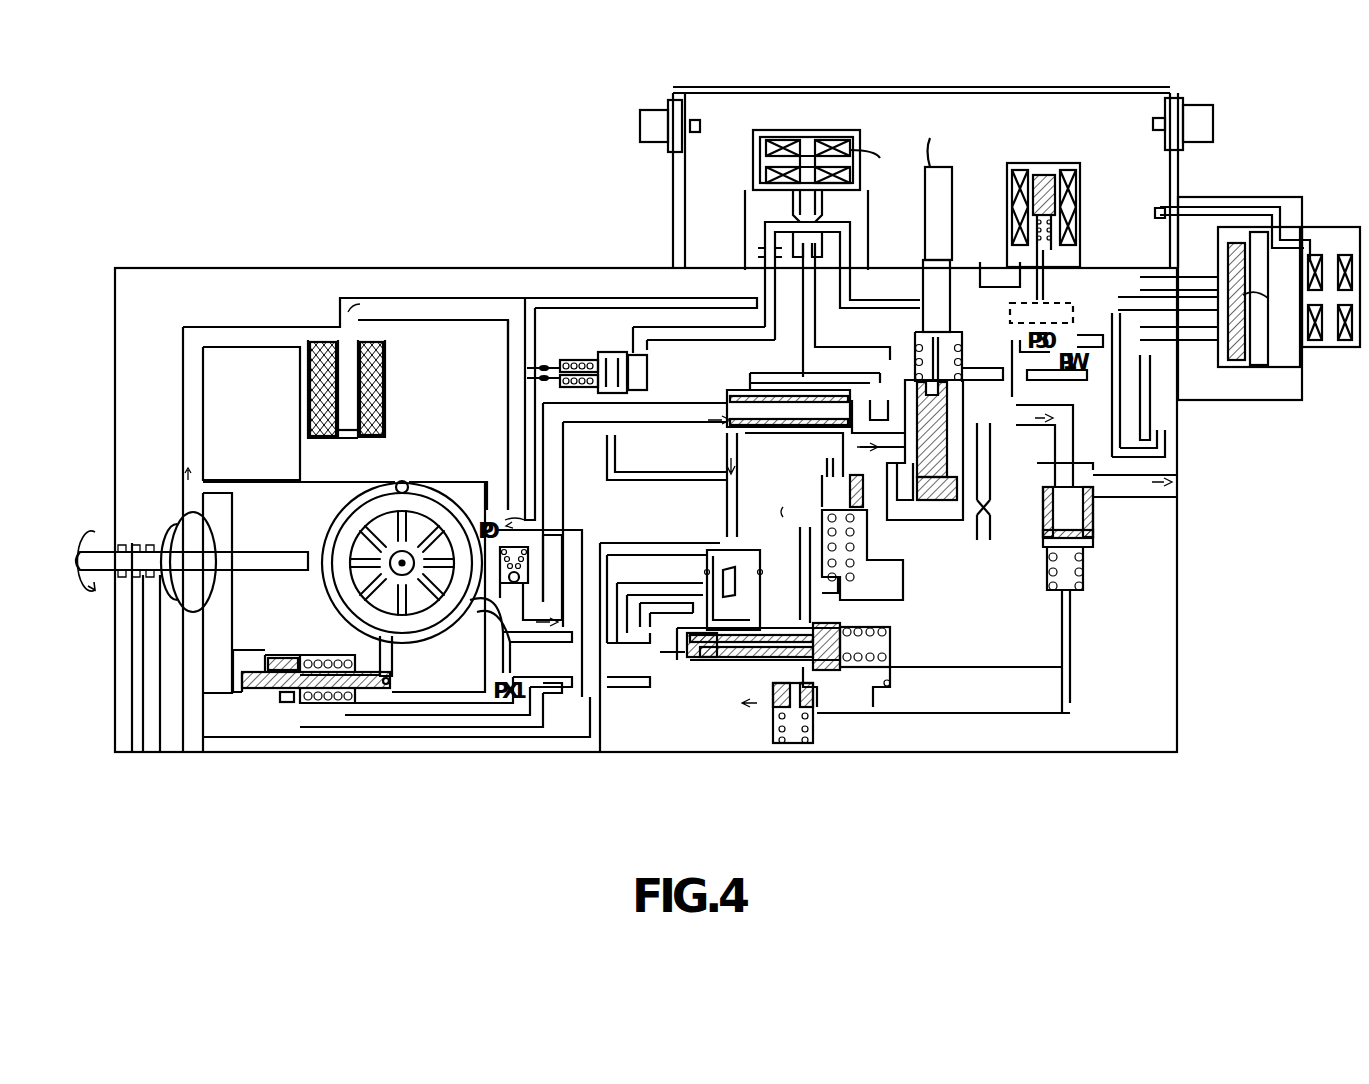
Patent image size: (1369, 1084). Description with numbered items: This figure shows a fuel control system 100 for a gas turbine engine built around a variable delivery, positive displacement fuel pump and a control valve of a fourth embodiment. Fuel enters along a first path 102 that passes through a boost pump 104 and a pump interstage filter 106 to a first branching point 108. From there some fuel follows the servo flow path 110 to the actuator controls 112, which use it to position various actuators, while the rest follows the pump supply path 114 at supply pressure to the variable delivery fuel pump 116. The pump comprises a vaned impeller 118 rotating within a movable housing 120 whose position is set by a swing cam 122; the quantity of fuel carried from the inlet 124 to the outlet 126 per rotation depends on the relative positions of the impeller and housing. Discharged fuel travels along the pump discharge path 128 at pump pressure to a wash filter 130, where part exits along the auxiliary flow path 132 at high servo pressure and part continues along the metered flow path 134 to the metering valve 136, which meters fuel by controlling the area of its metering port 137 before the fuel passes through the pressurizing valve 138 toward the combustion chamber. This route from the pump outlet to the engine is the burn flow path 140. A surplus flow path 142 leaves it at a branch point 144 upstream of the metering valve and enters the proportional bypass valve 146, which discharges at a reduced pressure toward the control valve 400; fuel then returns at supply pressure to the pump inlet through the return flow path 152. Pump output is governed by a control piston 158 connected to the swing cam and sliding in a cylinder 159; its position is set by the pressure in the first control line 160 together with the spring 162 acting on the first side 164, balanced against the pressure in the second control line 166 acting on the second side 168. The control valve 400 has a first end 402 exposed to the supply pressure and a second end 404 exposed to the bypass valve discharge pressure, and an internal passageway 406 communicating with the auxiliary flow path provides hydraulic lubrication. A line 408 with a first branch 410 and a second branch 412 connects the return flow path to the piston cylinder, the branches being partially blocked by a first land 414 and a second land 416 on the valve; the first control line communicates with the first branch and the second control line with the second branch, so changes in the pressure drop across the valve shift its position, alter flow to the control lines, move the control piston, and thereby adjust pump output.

The fuel control system 100 is at (140, 206).
The first path 102 is at (178, 735).
The boost pump 104 is at (185, 600).
The pump interstage filter 106 is at (333, 340).
The first branching point 108 is at (525, 310).
The servo flow path 110 is at (612, 350).
The actuator controls 112 is at (1262, 180).
The pump supply path 114 is at (508, 345).
The variable delivery fuel pump 116 is at (380, 549).
The vaned impeller 118 is at (335, 535).
The movable housing 120 is at (345, 520).
The swing cam 122 is at (395, 663).
The inlet 124 is at (476, 525).
The outlet 126 is at (482, 607).
The pump discharge path 128 is at (565, 478).
The wash filter 130 is at (750, 390).
The auxiliary flow path 132 is at (745, 515).
The metered flow path 134 is at (805, 415).
The metering valve 136 is at (920, 363).
The metering port 137 is at (970, 405).
The pressurizing valve 138 is at (1085, 528).
The burn flow path 140 is at (890, 447).
The surplus flow path 142 is at (827, 457).
The branch point 144 is at (847, 450).
The proportional bypass valve 146 is at (883, 555).
The return flow path 152 is at (605, 710).
The control piston 158 is at (295, 652).
The cylinder 159 is at (275, 710).
The first control line 160 is at (448, 712).
The spring 162 is at (345, 655).
The first side 164 is at (315, 703).
The second control line 166 is at (492, 738).
The second side 168 is at (280, 665).
The control valve 400 is at (870, 688).
The first end 402 is at (888, 657).
The second end 404 is at (695, 640).
The internal passageway 406 is at (770, 700).
The line 408 is at (703, 560).
The first branch 410 is at (702, 578).
The second branch 412 is at (695, 660).
The first land 414 is at (705, 640).
The second land 416 is at (773, 590).